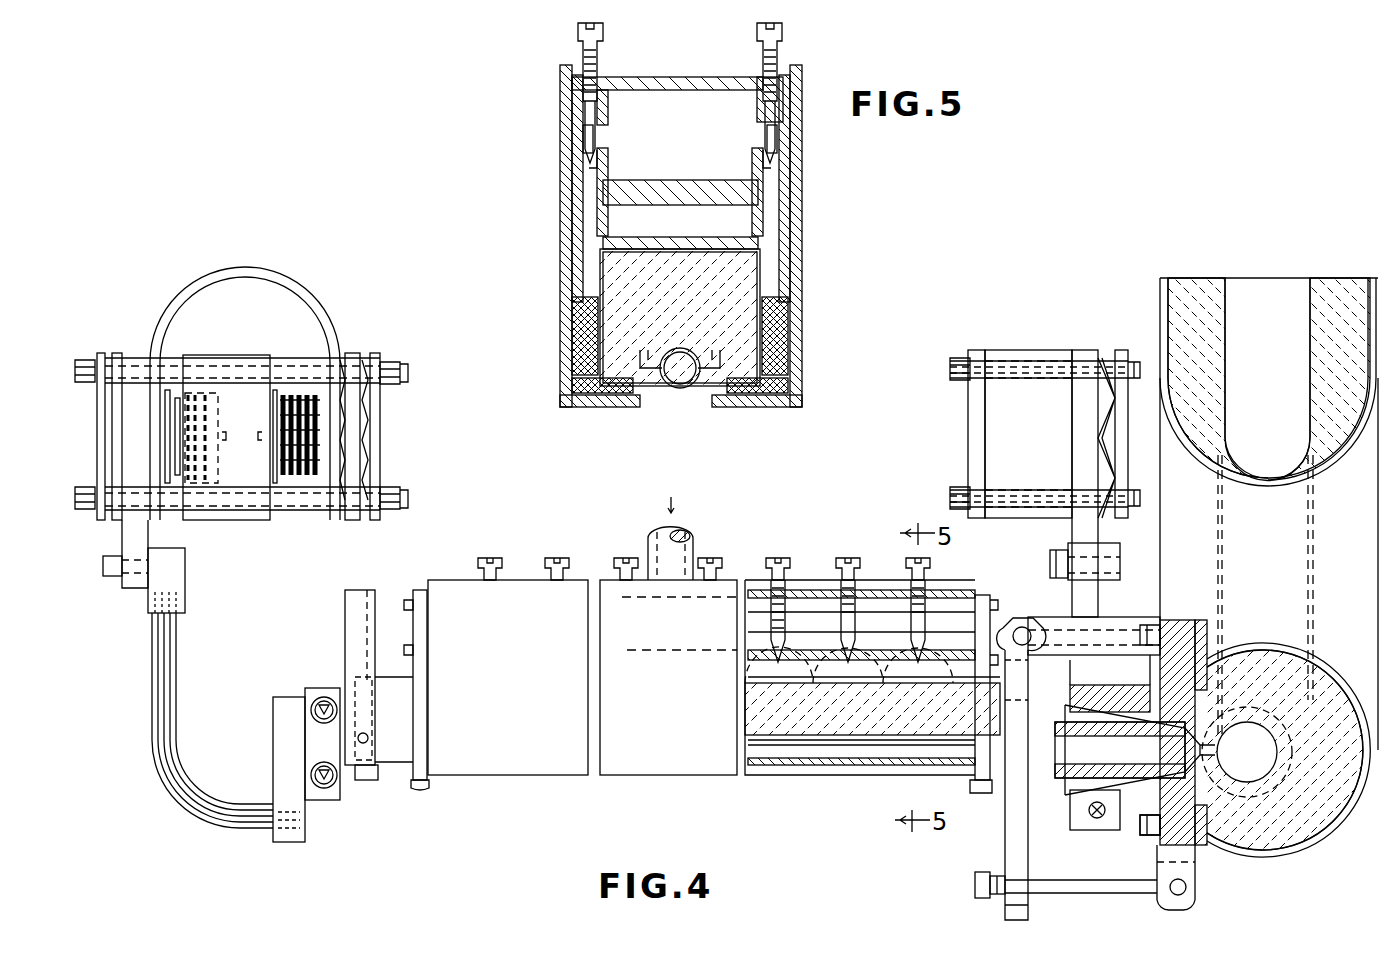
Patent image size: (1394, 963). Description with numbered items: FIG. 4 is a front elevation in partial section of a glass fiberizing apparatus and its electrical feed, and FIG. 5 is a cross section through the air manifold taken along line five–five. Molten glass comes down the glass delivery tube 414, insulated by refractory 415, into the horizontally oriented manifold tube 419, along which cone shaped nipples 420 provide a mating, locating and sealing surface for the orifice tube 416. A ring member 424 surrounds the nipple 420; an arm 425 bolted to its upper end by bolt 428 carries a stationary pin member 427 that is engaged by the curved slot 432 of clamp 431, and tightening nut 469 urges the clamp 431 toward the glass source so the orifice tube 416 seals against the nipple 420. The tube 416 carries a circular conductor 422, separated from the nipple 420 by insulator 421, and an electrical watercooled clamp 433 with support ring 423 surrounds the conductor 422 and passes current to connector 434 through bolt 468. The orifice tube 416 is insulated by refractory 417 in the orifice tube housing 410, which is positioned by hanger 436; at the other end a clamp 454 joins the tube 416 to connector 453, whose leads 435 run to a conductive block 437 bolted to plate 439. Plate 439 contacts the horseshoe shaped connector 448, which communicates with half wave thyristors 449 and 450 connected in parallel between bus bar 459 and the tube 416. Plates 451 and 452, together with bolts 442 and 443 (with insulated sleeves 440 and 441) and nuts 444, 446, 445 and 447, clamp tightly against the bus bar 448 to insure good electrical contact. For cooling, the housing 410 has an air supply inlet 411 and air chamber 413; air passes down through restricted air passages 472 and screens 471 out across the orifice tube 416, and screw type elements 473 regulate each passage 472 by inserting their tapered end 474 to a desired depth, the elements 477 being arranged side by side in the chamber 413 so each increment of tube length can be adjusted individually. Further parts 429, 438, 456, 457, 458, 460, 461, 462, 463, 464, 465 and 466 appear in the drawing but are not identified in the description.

In FIG. 5, the orifice tube housing 410 is at (700, 125).
In FIG. 4, the orifice tube housing 410 is at (505, 567).
In FIG. 4, the air supply inlet 411 is at (694, 536).
In FIG. 4, the air chamber 413 is at (734, 650).
In FIG. 4, the glass delivery tube 414 is at (1268, 280).
In FIG. 4, the refractory 415 is at (1334, 282).
In FIG. 5, the orifice tube 416 is at (660, 388).
In FIG. 4, the orifice tube 416 is at (832, 765).
In FIG. 5, the refractory 417 is at (706, 257).
In FIG. 4, the refractory 417 is at (892, 745).
In FIG. 4, the manifold tube 419 is at (1278, 760).
In FIG. 4, the cone shaped nipple 420 is at (1210, 738).
In FIG. 4, the insulator 421 is at (1197, 748).
In FIG. 4, the circular conductor 422 is at (1140, 725).
In FIG. 4, the support ring 423 is at (1070, 822).
In FIG. 4, the ring member 424 is at (1207, 625).
In FIG. 4, the arm 425 is at (1116, 611).
In FIG. 4, the stationary pin member 427 is at (999, 630).
In FIG. 4, the bolt 428 is at (1148, 617).
In FIG. 4, the bolt 429 is at (1148, 833).
In FIG. 4, the clamp 431 is at (1005, 830).
In FIG. 4, the curved slot 432 is at (1052, 588).
In FIG. 4, the electrical watercooled clamp 433 is at (1097, 818).
In FIG. 4, the connector 434 is at (1075, 350).
In FIG. 4, the leads 435 is at (178, 633).
In FIG. 4, the hanger 436 is at (375, 635).
In FIG. 4, the conductive block 437 is at (186, 553).
In FIG. 4, the rod 438 is at (110, 553).
In FIG. 4, the plate 439 is at (139, 353).
In FIG. 4, the insulated sleeve 440 is at (254, 356).
In FIG. 4, the insulated sleeve 441 is at (277, 518).
In FIG. 4, the bolt 442 is at (400, 372).
In FIG. 4, the bolt 443 is at (402, 507).
In FIG. 4, the nut 444 is at (407, 385).
In FIG. 4, the nut 445 is at (406, 495).
In FIG. 4, the nut 446 is at (88, 360).
In FIG. 4, the nut 447 is at (88, 487).
In FIG. 4, the connector 448 is at (230, 270).
In FIG. 4, the thyristor 449 is at (304, 394).
In FIG. 4, the thyristor 450 is at (195, 394).
In FIG. 4, the plate 451 is at (344, 353).
In FIG. 4, the plate 452 is at (364, 353).
In FIG. 4, the connector 453 is at (295, 839).
In FIG. 4, the clamp 454 is at (338, 795).
In FIG. 4, the plate 456 is at (373, 565).
In FIG. 4, the screw 457 is at (317, 700).
In FIG. 4, the screw 458 is at (324, 788).
In FIG. 4, the bus bar 459 is at (267, 418).
In FIG. 4, the rod 460 is at (948, 497).
In FIG. 4, the housing 461 is at (1050, 353).
In FIG. 4, the rod 462 is at (1052, 488).
In FIG. 4, the bolt 463 is at (950, 490).
In FIG. 4, the bolt 464 is at (950, 360).
In FIG. 4, the plate 465 is at (968, 432).
In FIG. 4, the plate 466 is at (1128, 340).
In FIG. 4, the bolt 468 is at (1050, 565).
In FIG. 4, the nut 469 is at (979, 898).
In FIG. 5, the screens 471 is at (573, 325).
In FIG. 5, the restricted air passages 472 is at (595, 149).
In FIG. 5, the screw type element 473 is at (758, 34).
In FIG. 4, the screw type element 473 is at (500, 558).
In FIG. 5, the tapered end 474 is at (587, 130).
In FIG. 5, the elements 477 is at (802, 234).